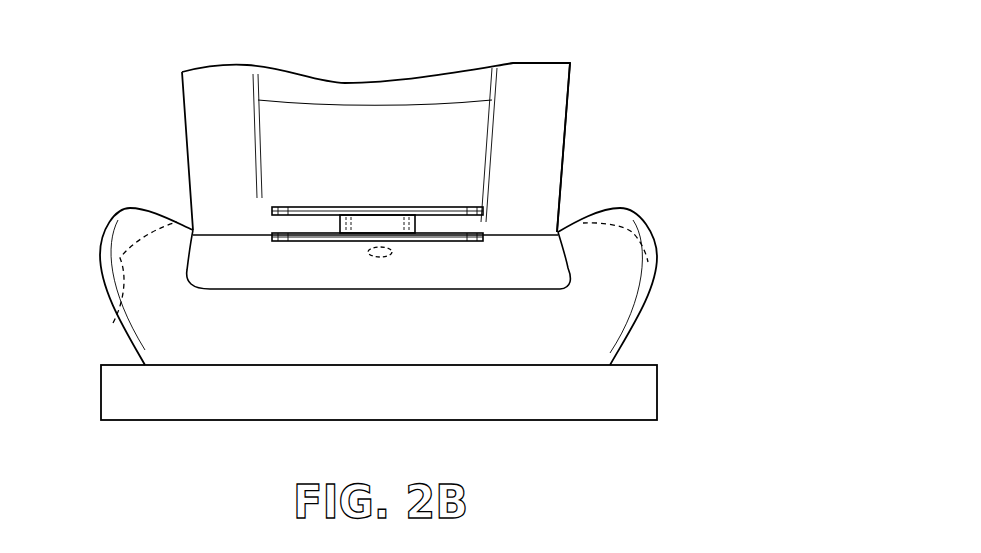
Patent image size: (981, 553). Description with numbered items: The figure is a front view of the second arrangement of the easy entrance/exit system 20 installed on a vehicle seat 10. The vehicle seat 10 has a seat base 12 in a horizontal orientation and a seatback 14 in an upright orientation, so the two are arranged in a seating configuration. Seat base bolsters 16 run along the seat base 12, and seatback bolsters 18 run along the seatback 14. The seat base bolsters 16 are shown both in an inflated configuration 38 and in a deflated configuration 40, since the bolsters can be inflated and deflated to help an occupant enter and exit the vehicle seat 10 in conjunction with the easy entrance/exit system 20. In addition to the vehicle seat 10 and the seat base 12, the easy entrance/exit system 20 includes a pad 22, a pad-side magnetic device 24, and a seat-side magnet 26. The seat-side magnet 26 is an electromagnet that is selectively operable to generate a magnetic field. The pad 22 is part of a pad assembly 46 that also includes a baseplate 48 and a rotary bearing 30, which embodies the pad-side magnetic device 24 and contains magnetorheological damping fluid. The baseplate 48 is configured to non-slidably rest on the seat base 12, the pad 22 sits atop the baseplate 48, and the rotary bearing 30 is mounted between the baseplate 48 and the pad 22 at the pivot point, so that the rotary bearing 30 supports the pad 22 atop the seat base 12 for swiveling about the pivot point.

The vehicle seat 10 is at (374, 219).
The seat base 12 is at (374, 277).
The seatback 14 is at (565, 157).
The seat base bolsters 16 is at (632, 230).
The seatback bolsters 18 is at (540, 100).
The easy entrance/exit system 20 is at (372, 142).
The pad 22 is at (268, 210).
The pad-side magnetic device 24 is at (370, 180).
The seat-side magnet 26 is at (380, 258).
The rotary bearing 30 is at (368, 222).
The inflated configuration 38 is at (100, 237).
The deflated configuration 40 is at (113, 323).
The pad assembly 46 is at (404, 186).
The baseplate 48 is at (440, 241).